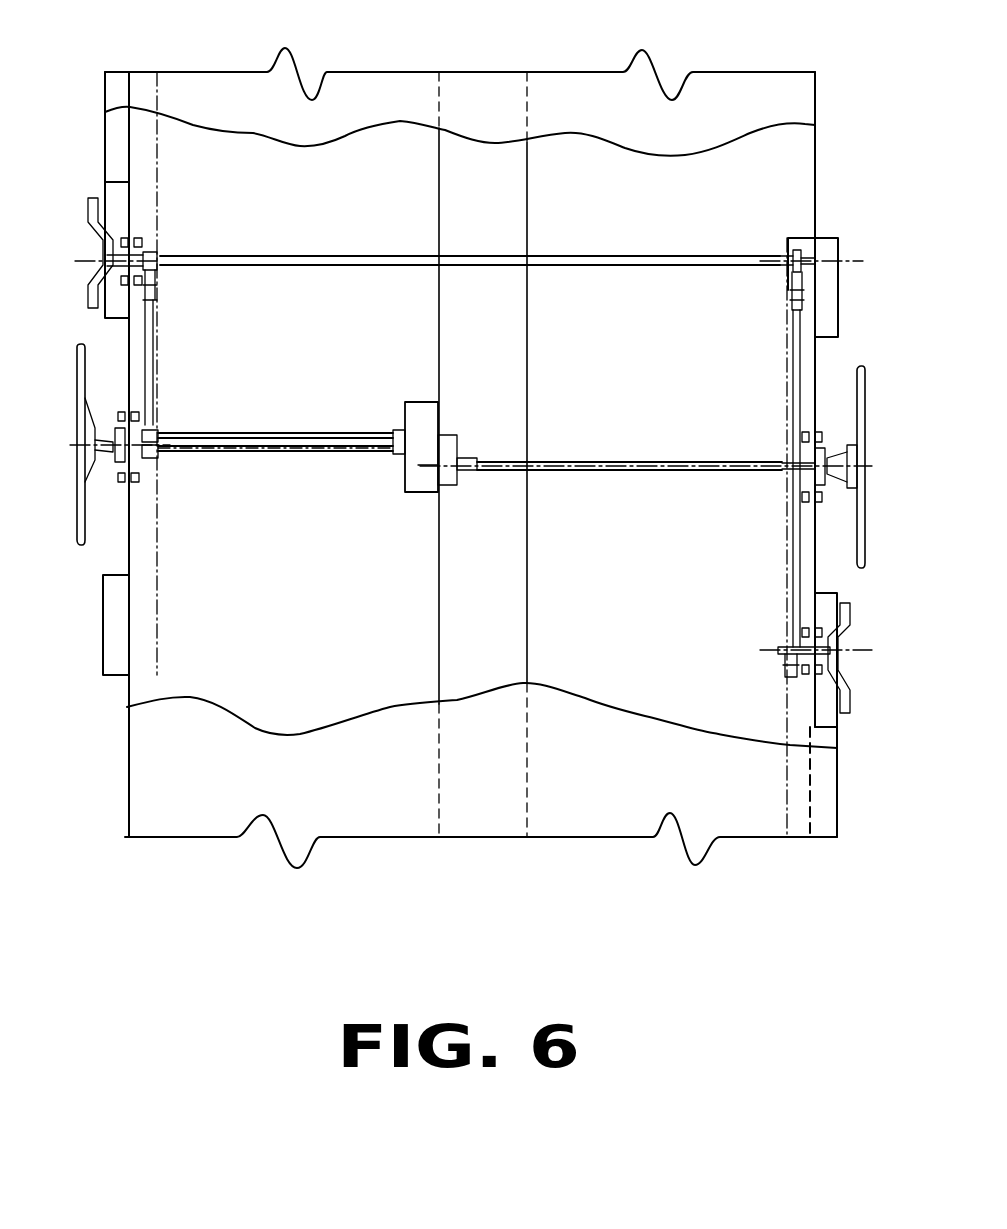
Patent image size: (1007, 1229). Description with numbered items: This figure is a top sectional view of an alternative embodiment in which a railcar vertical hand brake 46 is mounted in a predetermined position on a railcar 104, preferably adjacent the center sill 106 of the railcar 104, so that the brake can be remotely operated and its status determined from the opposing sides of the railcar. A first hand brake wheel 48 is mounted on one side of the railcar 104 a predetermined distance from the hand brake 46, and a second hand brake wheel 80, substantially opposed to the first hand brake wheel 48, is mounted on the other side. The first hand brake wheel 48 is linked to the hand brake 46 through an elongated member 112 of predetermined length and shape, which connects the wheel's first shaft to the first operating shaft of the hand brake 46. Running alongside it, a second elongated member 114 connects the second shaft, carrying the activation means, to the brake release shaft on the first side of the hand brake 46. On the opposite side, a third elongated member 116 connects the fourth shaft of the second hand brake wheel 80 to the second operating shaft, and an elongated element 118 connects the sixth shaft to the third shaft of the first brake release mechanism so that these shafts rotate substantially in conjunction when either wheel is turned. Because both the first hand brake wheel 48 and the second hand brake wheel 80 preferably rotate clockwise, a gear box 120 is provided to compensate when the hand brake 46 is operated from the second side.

The railcar 104 is at (583, 53).
The center sill 106 is at (517, 187).
The elongated element 118 is at (618, 258).
The railcar vertical hand brake 46 is at (413, 392).
The gear box 120 is at (448, 445).
The second elongated member 114 is at (327, 435).
The elongated member 112 is at (270, 453).
The third elongated member 116 is at (613, 460).
The second hand brake wheel 80 is at (863, 423).
The first hand brake wheel 48 is at (77, 533).